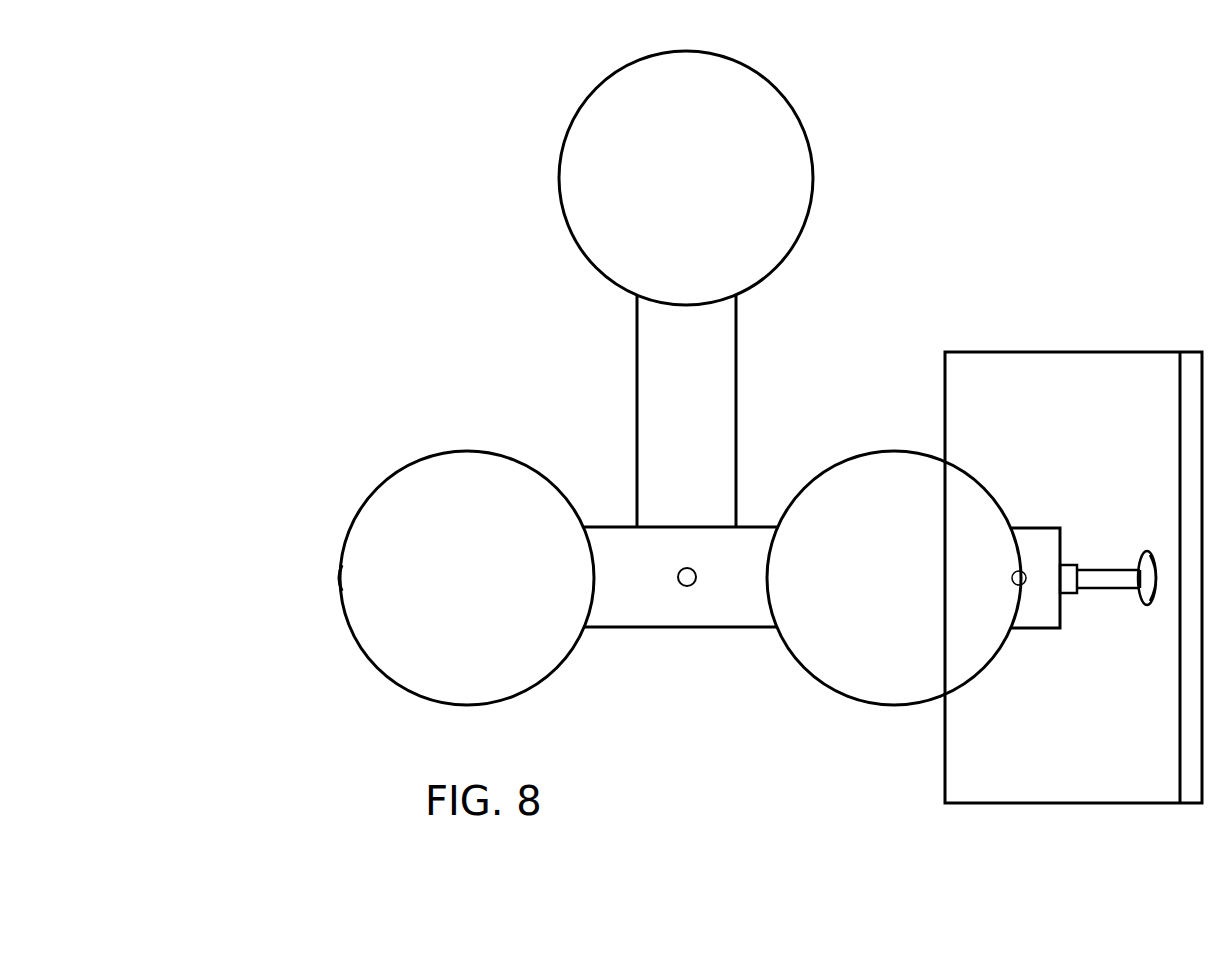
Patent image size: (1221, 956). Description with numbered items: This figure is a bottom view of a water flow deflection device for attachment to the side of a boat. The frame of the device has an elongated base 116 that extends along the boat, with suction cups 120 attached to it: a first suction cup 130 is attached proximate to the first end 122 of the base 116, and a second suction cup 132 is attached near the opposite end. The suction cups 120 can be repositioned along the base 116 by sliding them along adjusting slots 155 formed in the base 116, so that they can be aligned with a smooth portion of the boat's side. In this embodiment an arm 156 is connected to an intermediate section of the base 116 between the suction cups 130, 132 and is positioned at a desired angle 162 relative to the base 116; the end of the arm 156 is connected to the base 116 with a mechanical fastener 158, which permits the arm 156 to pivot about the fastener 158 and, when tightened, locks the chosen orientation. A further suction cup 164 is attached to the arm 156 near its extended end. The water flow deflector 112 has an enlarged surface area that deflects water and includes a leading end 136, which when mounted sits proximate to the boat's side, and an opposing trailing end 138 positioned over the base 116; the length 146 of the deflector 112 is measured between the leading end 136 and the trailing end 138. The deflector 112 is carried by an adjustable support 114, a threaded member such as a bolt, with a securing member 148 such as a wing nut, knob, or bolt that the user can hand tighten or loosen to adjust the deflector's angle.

The water flow deflector 112 is at (1158, 325).
The adjustable support 114 is at (1100, 590).
The elongated base 116 is at (685, 632).
The suction cups 120 is at (790, 670).
The first end 122 is at (1031, 545).
The first suction cup 130 is at (912, 445).
The second suction cup 132 is at (385, 482).
The leading end 136 is at (1205, 863).
The trailing end 138 is at (945, 863).
The length 146 is at (1203, 852).
The securing member 148 is at (1063, 565).
The adjusting slots 155 is at (1022, 586).
The arm 156 is at (636, 358).
The mechanical fastener 158 is at (689, 567).
The angle 162 is at (636, 480).
The suction cup 164 is at (740, 61).